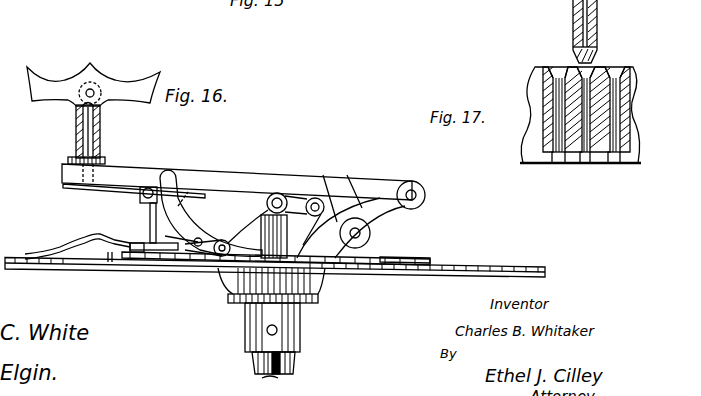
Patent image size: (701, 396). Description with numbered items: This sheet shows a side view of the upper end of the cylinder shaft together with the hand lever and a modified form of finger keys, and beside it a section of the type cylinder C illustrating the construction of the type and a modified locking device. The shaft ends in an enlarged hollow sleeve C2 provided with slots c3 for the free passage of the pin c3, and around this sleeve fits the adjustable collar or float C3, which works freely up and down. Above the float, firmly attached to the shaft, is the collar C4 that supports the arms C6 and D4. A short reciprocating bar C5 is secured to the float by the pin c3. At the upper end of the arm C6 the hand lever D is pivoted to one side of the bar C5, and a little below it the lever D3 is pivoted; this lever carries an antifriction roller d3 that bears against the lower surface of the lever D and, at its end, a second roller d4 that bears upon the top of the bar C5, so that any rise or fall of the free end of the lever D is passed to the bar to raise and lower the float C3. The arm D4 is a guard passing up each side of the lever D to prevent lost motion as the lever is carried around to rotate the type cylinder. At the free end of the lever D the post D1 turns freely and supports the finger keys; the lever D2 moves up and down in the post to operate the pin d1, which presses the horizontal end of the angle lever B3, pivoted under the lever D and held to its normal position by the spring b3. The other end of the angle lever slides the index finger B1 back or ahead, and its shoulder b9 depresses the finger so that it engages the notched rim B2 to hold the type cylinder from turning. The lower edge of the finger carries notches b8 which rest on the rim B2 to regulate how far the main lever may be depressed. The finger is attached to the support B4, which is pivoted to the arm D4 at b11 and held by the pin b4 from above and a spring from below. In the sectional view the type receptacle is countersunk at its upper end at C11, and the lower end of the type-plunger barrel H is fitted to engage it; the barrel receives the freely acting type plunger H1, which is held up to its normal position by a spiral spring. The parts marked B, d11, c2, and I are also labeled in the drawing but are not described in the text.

In FIG. 16, the lever D2 is at (95, 62).
In FIG. 16, the post D1 is at (100, 136).
In FIG. 16, the pin d1 is at (88, 128).
In FIG. 16, the rod head d11 is at (83, 106).
In FIG. 16, the hand lever D is at (262, 172).
In FIG. 16, the angle lever B3 is at (106, 193).
In FIG. 16, the arm D4 is at (172, 173).
In FIG. 16, the spring b3 is at (186, 196).
In FIG. 16, the shoulder b9 is at (150, 226).
In FIG. 16, the index finger B1 is at (70, 250).
In FIG. 16, the support B4 is at (140, 242).
In FIG. 16, the pin b4 is at (201, 240).
In FIG. 16, the pivot b11 is at (240, 243).
In FIG. 16, the base B is at (545, 266).
In FIG. 16, the notched rim B2 is at (440, 243).
In FIG. 16, the notches b8 is at (110, 263).
In FIG. 16, the reciprocating bar C5 is at (262, 220).
In FIG. 16, the roller d4 is at (280, 192).
In FIG. 16, the antifriction roller d3 is at (316, 198).
In FIG. 16, the lever D3 is at (339, 205).
In FIG. 16, the arm C6 is at (370, 220).
In FIG. 16, the collar C4 is at (245, 279).
In FIG. 16, the float C3 is at (255, 318).
In FIG. 16, the pin c3 is at (267, 331).
In FIG. 16, the sleeve C2 is at (252, 354).
In FIG. 16, the opening c2 is at (269, 384).
In FIG. 17, the type-plunger barrel H is at (573, 24).
In FIG. 17, the type plunger H1 is at (578, 43).
In FIG. 17, the type cylinder C is at (535, 101).
In FIG. 17, the countersink C11 is at (597, 68).
In FIG. 17, the insert I is at (614, 165).